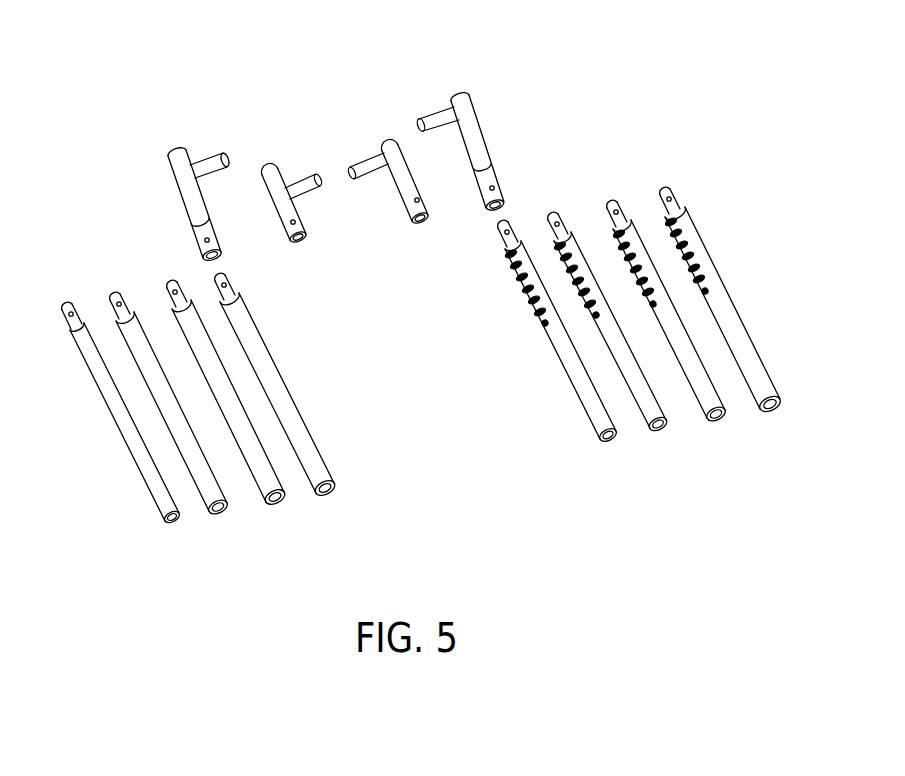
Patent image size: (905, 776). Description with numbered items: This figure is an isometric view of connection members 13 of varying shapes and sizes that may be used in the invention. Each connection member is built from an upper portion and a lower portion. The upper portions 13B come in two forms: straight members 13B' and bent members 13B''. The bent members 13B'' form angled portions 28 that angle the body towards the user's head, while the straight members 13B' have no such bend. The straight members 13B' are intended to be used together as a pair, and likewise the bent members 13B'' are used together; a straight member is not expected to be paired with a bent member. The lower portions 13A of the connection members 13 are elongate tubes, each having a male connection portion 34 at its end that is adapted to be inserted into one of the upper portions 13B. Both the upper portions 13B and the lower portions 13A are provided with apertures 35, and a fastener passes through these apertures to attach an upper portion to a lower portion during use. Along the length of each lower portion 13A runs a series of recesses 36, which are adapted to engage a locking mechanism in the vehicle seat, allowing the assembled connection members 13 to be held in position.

The connection members 13 is at (338, 386).
The lower portions 13A is at (328, 492).
The upper portions 13B is at (342, 156).
The straight members 13B' is at (329, 171).
The bent members 13B'' is at (342, 156).
The angled portions 28 is at (173, 192).
The male connection portions 34 is at (665, 192).
The apertures 35 is at (222, 282).
The recesses 36 is at (530, 305).